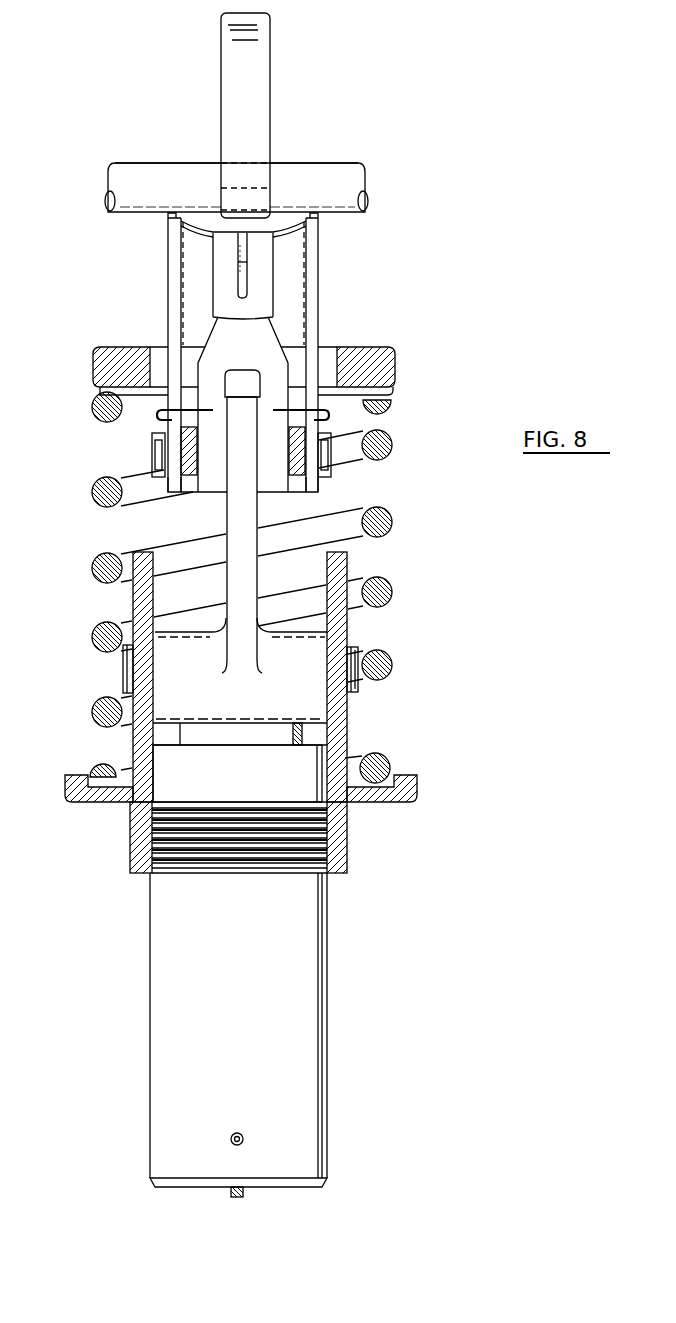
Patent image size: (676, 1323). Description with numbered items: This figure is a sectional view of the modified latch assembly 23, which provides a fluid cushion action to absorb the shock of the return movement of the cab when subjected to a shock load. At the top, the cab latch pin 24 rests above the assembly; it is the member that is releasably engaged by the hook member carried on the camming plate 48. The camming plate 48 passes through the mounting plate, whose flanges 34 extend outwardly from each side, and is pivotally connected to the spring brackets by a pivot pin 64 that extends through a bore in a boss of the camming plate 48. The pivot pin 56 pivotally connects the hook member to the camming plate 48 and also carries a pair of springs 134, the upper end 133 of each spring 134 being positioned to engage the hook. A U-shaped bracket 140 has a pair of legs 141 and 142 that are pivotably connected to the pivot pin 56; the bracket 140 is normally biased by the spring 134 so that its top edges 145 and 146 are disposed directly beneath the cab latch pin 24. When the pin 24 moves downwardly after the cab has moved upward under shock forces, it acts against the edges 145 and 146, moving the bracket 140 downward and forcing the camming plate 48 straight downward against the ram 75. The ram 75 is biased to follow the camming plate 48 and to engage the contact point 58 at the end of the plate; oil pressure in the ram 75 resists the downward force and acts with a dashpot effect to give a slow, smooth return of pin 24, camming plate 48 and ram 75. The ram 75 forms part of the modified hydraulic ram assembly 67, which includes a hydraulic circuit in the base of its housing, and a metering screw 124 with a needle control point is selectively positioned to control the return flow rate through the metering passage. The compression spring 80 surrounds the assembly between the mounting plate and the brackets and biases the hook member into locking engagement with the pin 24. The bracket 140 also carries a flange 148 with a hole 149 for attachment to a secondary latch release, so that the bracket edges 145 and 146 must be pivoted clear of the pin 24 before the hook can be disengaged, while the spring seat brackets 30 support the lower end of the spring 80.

The cab latch pin 24 is at (333, 172).
The top edge of bracket 146 is at (168, 216).
The top edge of bracket 145 is at (318, 216).
The U-shaped bracket 140 is at (300, 266).
The flange 148 is at (238, 287).
The hole 149 is at (238, 268).
The modified latch assembly 23 is at (338, 333).
The flanges 34 is at (395, 367).
The upper end of spring 133 is at (160, 413).
The pivot pin 56 is at (152, 447).
The spring 134 is at (190, 478).
The leg of bracket 142 is at (172, 490).
The leg of bracket 141 is at (312, 486).
The compression spring 80 is at (390, 520).
The camming plate 48 is at (257, 574).
The modified hydraulic ram assembly 67 is at (333, 937).
The contact point 58 is at (240, 726).
The ram 75 is at (302, 737).
The pivot pin 64 is at (123, 675).
The spring seat bracket 30 is at (70, 778).
The metering screw 124 is at (243, 1192).